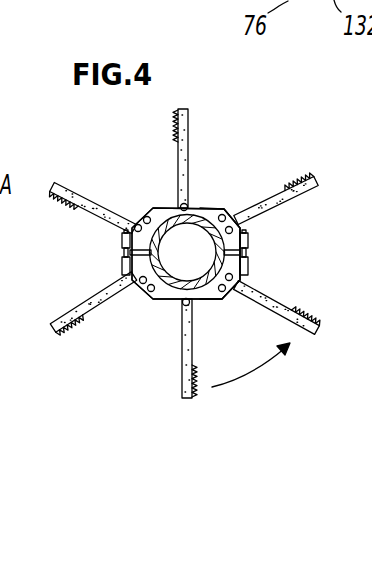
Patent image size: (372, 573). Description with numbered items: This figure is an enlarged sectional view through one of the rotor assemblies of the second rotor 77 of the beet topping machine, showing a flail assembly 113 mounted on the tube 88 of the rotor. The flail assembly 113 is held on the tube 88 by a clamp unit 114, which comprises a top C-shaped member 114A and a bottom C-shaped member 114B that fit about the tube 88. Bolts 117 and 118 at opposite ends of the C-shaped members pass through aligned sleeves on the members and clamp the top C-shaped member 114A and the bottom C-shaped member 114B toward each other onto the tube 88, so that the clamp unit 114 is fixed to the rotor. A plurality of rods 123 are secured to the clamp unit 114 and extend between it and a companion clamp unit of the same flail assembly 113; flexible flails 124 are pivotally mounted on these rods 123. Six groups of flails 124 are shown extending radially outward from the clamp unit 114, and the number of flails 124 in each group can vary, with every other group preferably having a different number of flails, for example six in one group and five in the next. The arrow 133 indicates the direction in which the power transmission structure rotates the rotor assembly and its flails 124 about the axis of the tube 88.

The second rotor 77 is at (262, 149).
The tube 88 is at (192, 228).
The flail assembly 113 is at (175, 387).
The clamp unit 114 is at (156, 204).
The top C-shaped member 114A is at (232, 210).
The bottom C-shaped member 114B is at (204, 296).
The bolt 117 is at (121, 242).
The bolt 118 is at (249, 242).
The rods 123 is at (179, 205).
The flails 124 is at (188, 118).
The arrow 133 is at (260, 368).